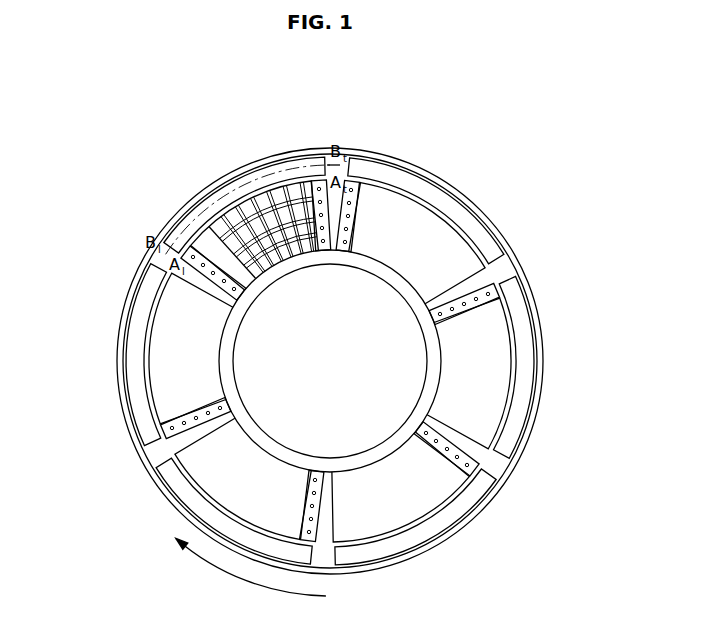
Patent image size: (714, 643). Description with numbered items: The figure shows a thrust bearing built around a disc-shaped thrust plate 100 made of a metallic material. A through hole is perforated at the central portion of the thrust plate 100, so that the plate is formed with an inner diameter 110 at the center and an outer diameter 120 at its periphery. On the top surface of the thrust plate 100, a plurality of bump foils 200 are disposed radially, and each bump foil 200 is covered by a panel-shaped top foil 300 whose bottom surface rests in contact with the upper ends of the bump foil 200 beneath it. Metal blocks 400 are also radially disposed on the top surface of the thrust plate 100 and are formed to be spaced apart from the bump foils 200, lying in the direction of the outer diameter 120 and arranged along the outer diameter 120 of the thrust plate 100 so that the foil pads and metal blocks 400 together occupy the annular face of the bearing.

The thrust plate 100 is at (157, 455).
The inner diameter 110 is at (235, 365).
The outer diameter 120 is at (160, 490).
The bump foils 200 is at (315, 203).
The top foils 300 is at (172, 377).
The metal blocks 400 is at (133, 338).